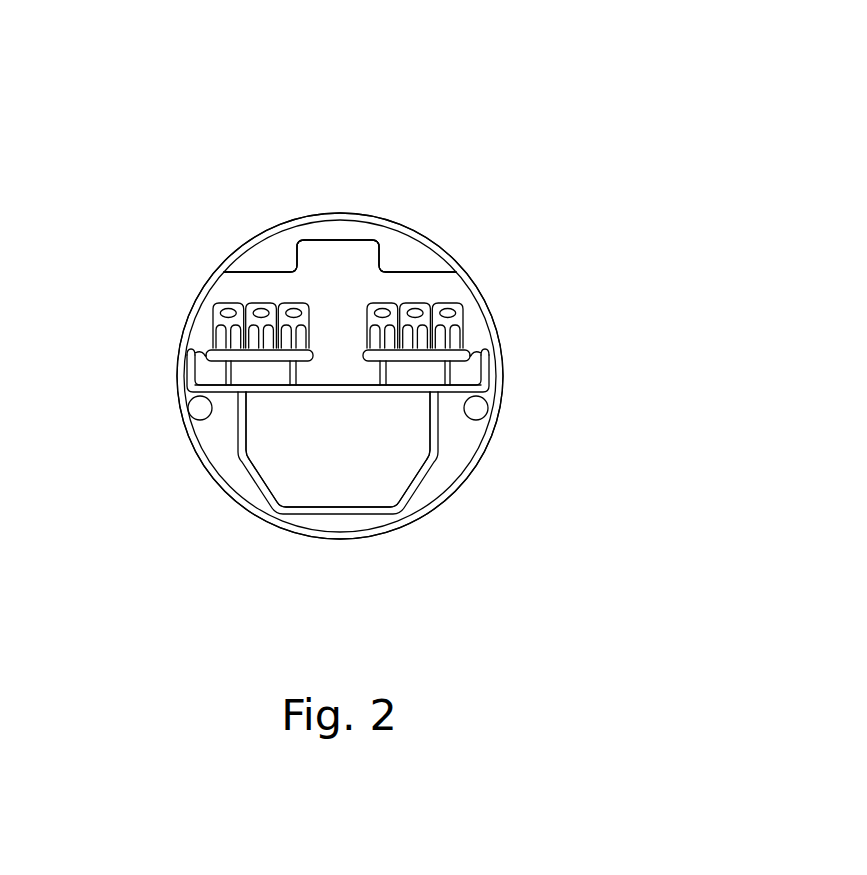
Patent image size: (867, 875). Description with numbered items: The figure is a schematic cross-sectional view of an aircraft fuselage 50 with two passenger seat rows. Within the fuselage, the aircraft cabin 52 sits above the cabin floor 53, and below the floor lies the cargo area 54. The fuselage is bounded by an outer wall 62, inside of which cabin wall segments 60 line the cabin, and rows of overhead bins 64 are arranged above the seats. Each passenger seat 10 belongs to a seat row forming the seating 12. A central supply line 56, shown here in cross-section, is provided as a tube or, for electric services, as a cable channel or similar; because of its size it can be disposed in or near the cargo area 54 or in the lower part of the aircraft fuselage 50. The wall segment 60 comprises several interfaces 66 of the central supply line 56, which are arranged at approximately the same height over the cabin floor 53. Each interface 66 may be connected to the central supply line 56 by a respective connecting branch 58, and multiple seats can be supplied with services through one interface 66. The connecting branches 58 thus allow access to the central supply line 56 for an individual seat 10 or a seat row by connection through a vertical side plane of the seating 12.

The seat 10 is at (261, 288).
The seating 12 is at (260, 353).
The aircraft fuselage 50 is at (490, 115).
The aircraft cabin 52 is at (336, 280).
The cabin floor 53 is at (350, 393).
The cargo area 54 is at (266, 455).
The central supply line 56 is at (204, 408).
The connecting branch 58 is at (179, 383).
The cabin wall segment 60 is at (198, 307).
The outer wall 62 is at (232, 251).
The overhead bin 64 is at (269, 258).
The interface 66 is at (178, 348).